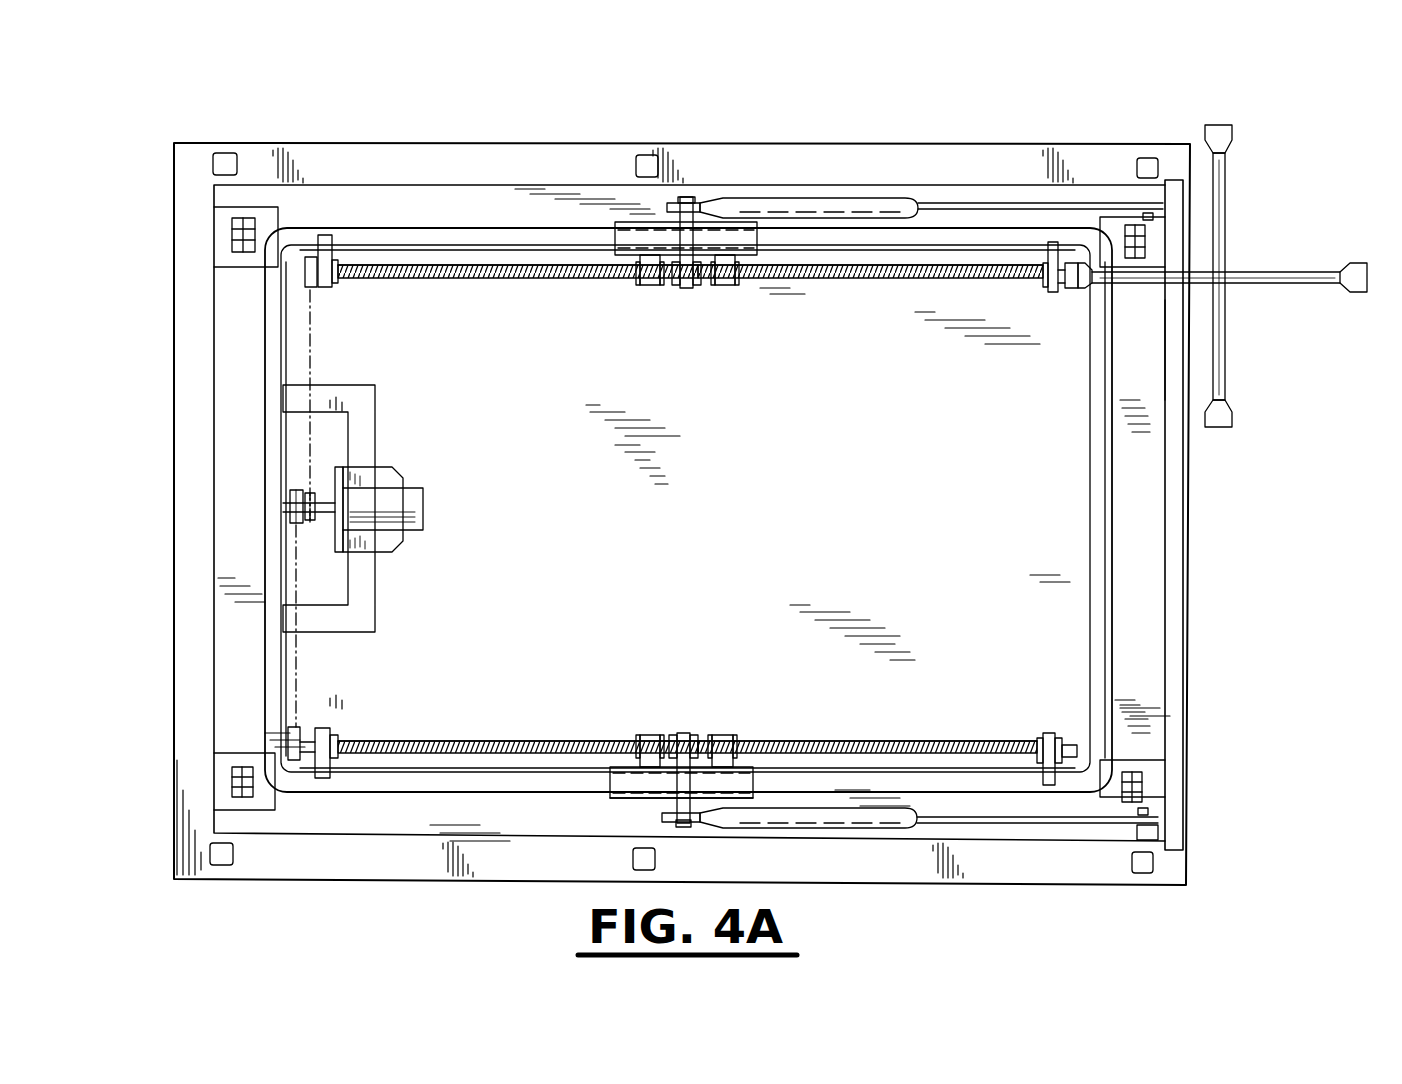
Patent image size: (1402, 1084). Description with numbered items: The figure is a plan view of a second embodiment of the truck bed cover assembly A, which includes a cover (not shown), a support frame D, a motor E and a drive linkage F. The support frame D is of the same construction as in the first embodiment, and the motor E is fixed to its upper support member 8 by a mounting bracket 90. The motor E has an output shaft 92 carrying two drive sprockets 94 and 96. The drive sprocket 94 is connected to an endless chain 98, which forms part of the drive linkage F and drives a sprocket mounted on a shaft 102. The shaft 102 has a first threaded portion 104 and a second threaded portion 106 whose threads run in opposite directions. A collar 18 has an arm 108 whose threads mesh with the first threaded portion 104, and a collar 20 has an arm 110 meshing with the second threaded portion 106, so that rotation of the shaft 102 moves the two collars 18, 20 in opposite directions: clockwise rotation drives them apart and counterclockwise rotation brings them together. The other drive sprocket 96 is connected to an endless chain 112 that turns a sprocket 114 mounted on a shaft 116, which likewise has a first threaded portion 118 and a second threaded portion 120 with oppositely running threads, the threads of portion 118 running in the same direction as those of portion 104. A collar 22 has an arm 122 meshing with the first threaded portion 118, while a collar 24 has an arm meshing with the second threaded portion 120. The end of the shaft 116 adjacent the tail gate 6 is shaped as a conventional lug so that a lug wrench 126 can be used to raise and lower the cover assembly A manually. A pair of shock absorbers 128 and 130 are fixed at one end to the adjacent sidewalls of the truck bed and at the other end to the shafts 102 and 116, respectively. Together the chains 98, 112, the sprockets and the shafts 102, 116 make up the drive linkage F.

The tail gate 6 is at (1190, 503).
The upper support member 8 is at (214, 327).
The collar 18 is at (618, 798).
The collar 20 is at (745, 767).
The collar 22 is at (627, 222).
The collar 24 is at (725, 285).
The mounting bracket 90 is at (372, 603).
The output shaft 92 is at (327, 500).
The drive sprocket 94 is at (290, 497).
The drive sprocket 96 is at (310, 527).
The endless chain 98 is at (297, 673).
The shaft 102 is at (552, 730).
The first threaded portion 104 is at (472, 740).
The second threaded portion 106 is at (887, 742).
The arm 108 is at (650, 735).
The arm 110 is at (722, 735).
The endless chain 112 is at (313, 347).
The sprocket 114 is at (305, 278).
The shaft 116 is at (550, 290).
The first threaded portion 118 is at (485, 283).
The second threaded portion 120 is at (873, 283).
The arm 122 is at (650, 285).
The lug wrench 126 is at (1295, 283).
The shock absorber 128 is at (870, 828).
The shock absorber 130 is at (848, 203).
The cover assembly A is at (505, 205).
The support frame D is at (1135, 632).
The motor E is at (422, 466).
The drive linkage F is at (390, 286).